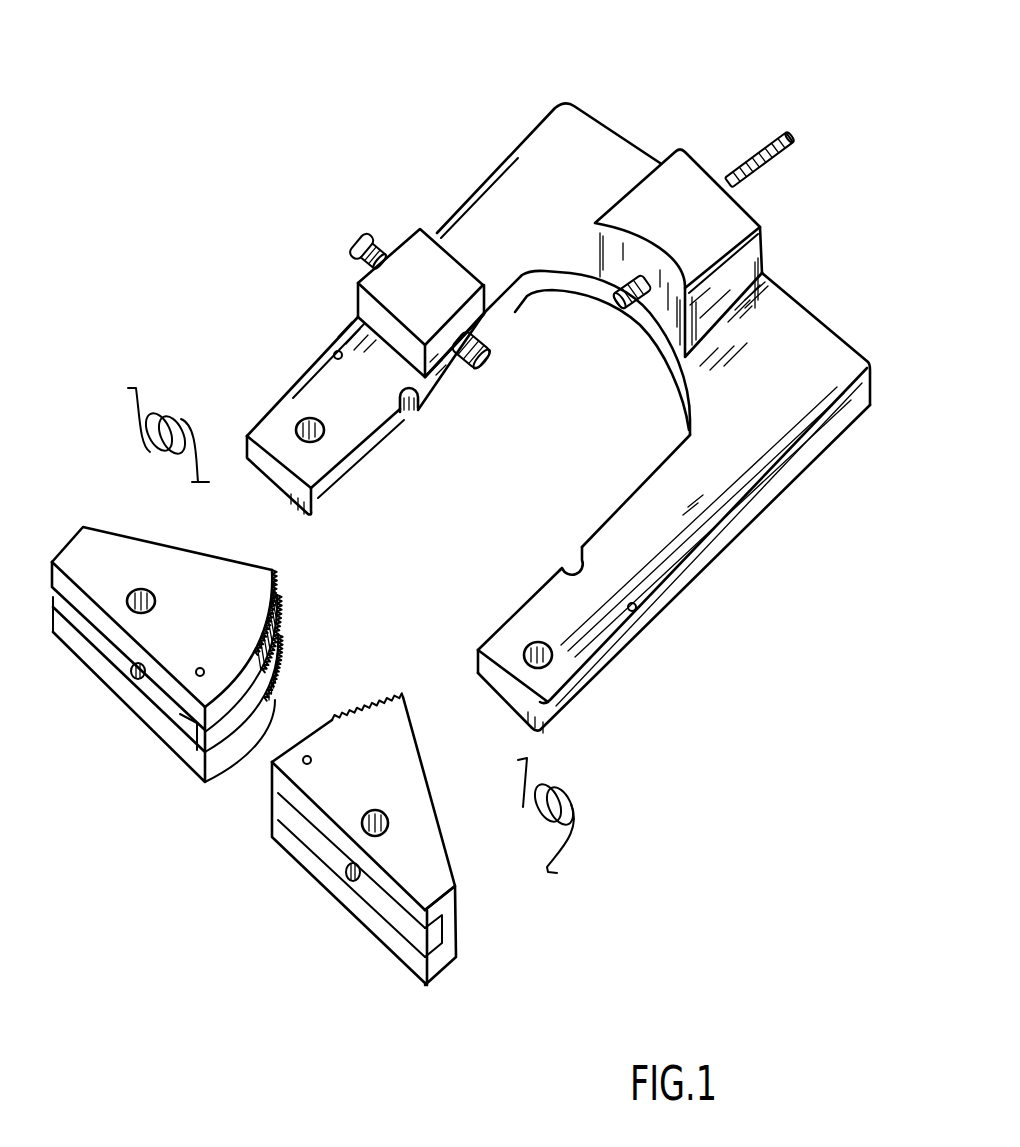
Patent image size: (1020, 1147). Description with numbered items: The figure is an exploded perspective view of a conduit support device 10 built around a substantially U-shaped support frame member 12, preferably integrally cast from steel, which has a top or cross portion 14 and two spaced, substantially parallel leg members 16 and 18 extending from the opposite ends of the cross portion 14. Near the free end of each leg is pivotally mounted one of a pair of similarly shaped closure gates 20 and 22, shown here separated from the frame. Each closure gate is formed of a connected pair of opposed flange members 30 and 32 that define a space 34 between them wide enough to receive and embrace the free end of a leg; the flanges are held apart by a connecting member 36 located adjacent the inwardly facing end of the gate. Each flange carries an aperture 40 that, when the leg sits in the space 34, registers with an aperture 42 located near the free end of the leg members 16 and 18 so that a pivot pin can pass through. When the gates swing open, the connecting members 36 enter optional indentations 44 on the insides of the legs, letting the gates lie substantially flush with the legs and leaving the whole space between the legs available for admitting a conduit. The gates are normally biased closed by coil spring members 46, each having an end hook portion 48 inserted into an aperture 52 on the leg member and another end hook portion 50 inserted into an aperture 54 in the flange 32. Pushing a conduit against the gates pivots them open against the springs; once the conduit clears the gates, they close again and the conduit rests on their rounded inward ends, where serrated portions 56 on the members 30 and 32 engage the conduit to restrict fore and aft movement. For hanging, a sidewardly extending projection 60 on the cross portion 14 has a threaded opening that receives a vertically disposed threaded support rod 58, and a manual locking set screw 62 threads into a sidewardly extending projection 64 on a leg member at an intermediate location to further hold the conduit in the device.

The conduit support device 10 is at (495, 112).
The support frame member 12 is at (565, 92).
The cross portion 14 is at (803, 330).
The leg member 16 is at (798, 462).
The leg member 18 is at (430, 228).
The closure gate 20 is at (461, 908).
The closure gate 22 is at (94, 681).
The flange member 30 is at (55, 622).
The flange member 32 is at (176, 690).
The space 34 is at (75, 618).
The connecting member 36 is at (205, 758).
The aperture 40 is at (152, 590).
The aperture 42 is at (324, 432).
The indentation 44 is at (411, 412).
The coil spring member 46 is at (147, 450).
The end hook portion 48 is at (128, 388).
The end hook portion 50 is at (203, 483).
The aperture 52 is at (338, 350).
The aperture 54 is at (205, 677).
The serrated portion 56 is at (281, 604).
The threaded support rod 58 is at (773, 167).
The projection 60 is at (764, 240).
The set screw 62 is at (367, 267).
The projection 64 is at (472, 318).